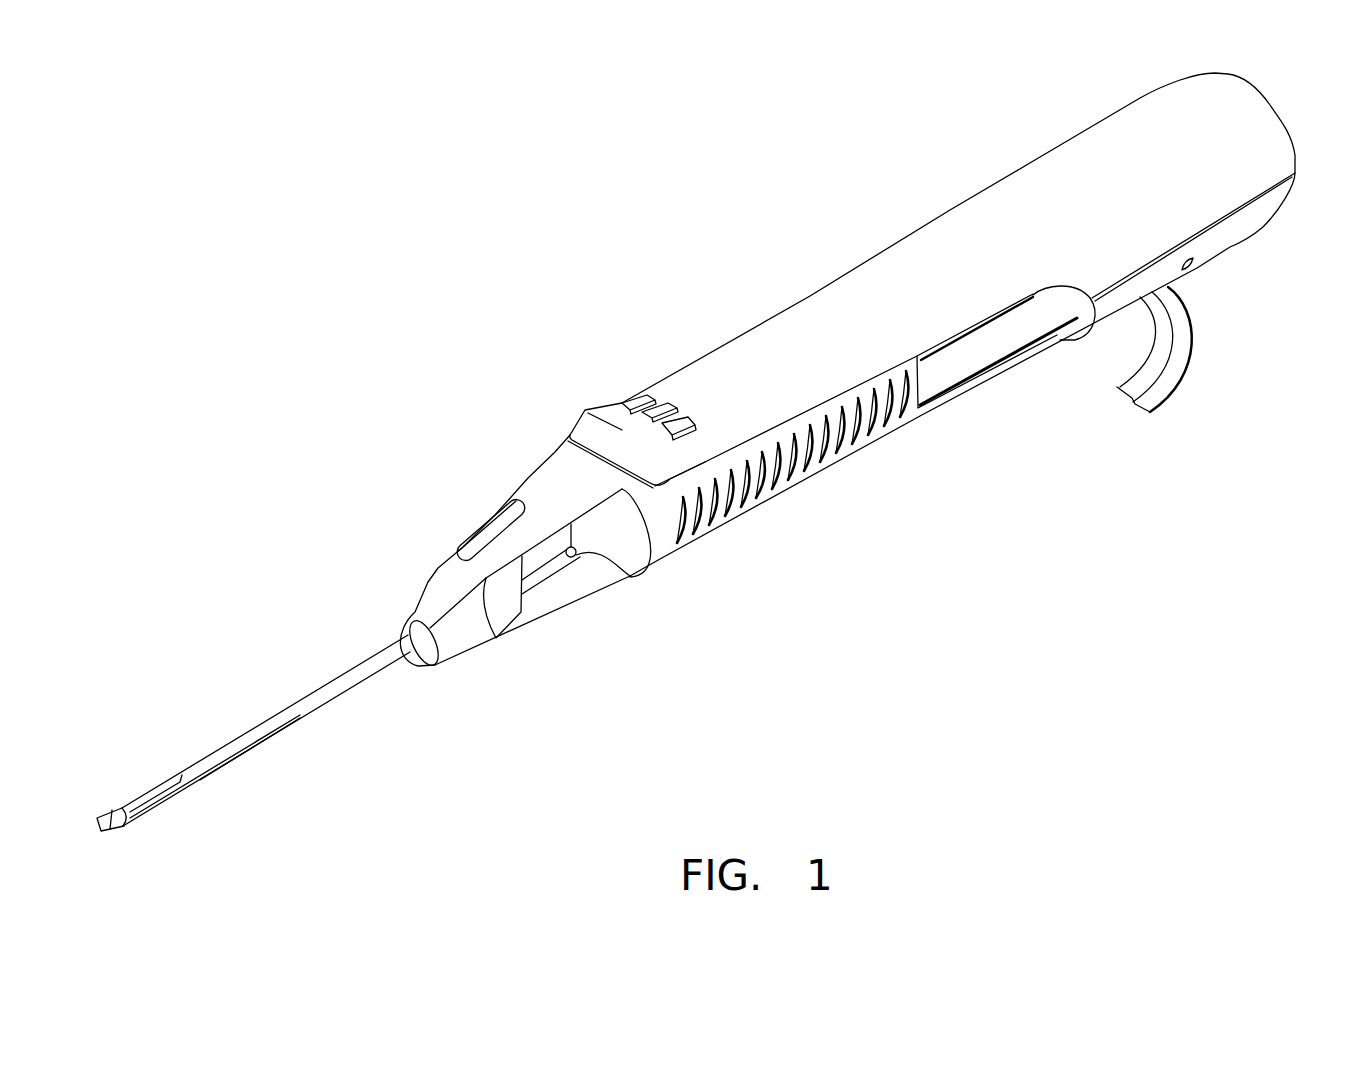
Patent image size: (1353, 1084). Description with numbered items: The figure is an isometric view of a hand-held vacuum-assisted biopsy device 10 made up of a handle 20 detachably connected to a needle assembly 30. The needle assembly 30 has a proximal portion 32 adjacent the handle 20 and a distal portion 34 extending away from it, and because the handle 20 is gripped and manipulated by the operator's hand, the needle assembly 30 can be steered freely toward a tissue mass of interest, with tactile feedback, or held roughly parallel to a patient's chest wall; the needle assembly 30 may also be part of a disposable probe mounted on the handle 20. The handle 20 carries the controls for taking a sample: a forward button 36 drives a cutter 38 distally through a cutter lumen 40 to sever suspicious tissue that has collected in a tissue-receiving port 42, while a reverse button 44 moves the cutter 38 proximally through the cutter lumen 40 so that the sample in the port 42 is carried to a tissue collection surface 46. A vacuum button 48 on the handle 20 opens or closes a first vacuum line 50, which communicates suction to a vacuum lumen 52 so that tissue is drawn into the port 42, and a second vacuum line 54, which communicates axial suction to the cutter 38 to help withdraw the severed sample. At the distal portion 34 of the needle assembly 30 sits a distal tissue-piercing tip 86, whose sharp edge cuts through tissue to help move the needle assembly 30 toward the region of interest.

The hand-held vacuum-assisted biopsy device 10 is at (578, 316).
The handle 20 is at (993, 267).
The needle assembly 30 is at (255, 724).
The proximal portion 32 is at (407, 683).
The distal portion 34 is at (212, 803).
The forward button 36 is at (626, 400).
The cutter 38 is at (580, 557).
The cutter lumen 40 is at (311, 694).
The tissue-receiving port 42 is at (160, 795).
The reverse button 44 is at (668, 400).
The tissue collection surface 46 is at (542, 601).
The vacuum button 48 is at (689, 418).
The first vacuum line 50 is at (1157, 327).
The vacuum lumen 52 is at (292, 734).
The second vacuum line 54 is at (1193, 338).
The distal tissue-piercing tip 86 is at (105, 832).